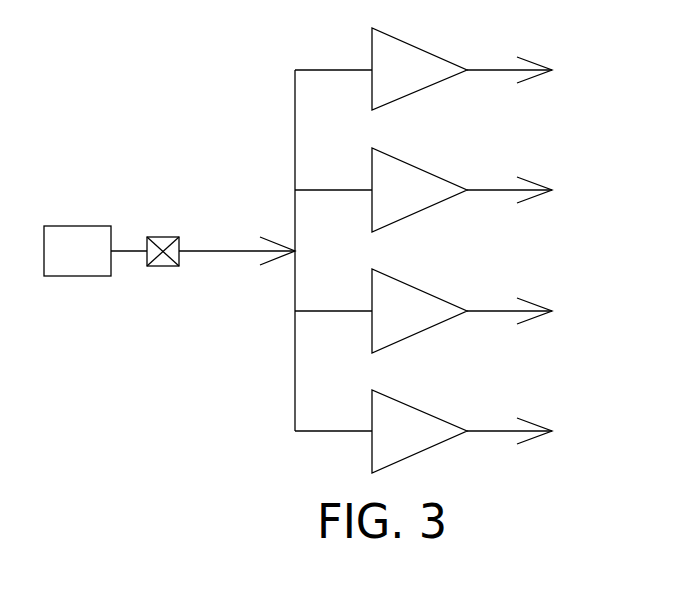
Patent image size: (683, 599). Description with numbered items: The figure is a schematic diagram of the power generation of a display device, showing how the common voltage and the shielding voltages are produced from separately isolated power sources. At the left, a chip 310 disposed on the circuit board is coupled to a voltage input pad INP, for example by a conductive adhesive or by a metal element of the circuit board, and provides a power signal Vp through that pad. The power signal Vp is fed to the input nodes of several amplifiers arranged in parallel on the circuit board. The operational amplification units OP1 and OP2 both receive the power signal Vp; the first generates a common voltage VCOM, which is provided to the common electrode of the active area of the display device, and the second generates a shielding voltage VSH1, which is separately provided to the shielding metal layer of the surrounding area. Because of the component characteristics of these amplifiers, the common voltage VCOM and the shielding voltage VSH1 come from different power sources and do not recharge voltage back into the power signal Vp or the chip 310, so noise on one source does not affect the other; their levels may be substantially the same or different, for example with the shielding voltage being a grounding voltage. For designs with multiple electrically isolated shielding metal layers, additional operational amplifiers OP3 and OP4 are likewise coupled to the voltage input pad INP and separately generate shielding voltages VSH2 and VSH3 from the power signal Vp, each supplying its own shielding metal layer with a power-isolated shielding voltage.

The chip 310 is at (75, 278).
The voltage input pad INP is at (160, 234).
The power signal Vp is at (235, 253).
The operational amplification unit OP1 is at (437, 61).
The operational amplification unit OP2 is at (437, 183).
The operational amplifier OP3 is at (437, 303).
The operational amplifier OP4 is at (437, 423).
The common voltage VCOM is at (545, 70).
The shielding voltage VSH1 is at (541, 190).
The shielding voltage VSH2 is at (543, 311).
The shielding voltage VSH3 is at (543, 431).